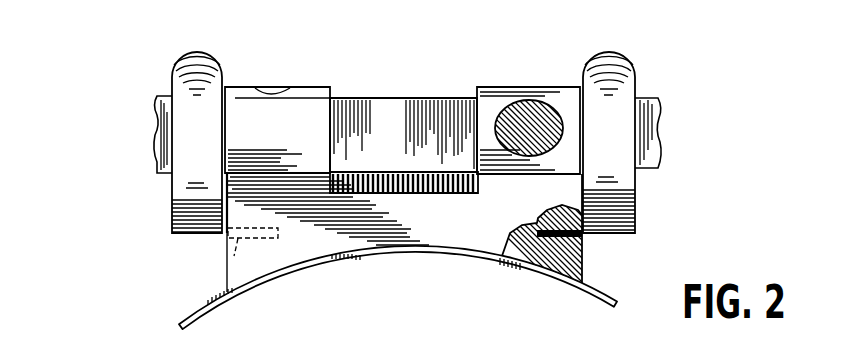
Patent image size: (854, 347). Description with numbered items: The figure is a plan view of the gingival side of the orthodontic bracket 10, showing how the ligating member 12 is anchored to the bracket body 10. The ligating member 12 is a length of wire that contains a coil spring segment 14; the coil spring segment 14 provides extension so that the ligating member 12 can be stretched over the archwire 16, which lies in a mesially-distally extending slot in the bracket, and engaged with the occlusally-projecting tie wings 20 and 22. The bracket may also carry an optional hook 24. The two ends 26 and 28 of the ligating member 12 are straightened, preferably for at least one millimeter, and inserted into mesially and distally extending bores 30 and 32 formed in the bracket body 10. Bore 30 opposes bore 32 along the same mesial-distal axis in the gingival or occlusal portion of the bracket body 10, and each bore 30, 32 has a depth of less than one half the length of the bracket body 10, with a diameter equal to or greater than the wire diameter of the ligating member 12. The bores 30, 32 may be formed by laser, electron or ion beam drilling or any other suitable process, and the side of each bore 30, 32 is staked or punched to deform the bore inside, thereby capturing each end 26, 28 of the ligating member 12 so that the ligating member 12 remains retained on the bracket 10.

The orthodontic bracket 10 is at (124, 81).
The ligating member 12 is at (643, 225).
The coil spring segment 14 is at (203, 53).
The archwire 16 is at (400, 142).
The tie wing 20 is at (323, 87).
The tie wing 22 is at (485, 90).
The hook 24 is at (532, 108).
The end of ligating member 26 is at (273, 240).
The end of ligating member 28 is at (540, 225).
The bore 30 is at (228, 262).
The bore 32 is at (562, 250).